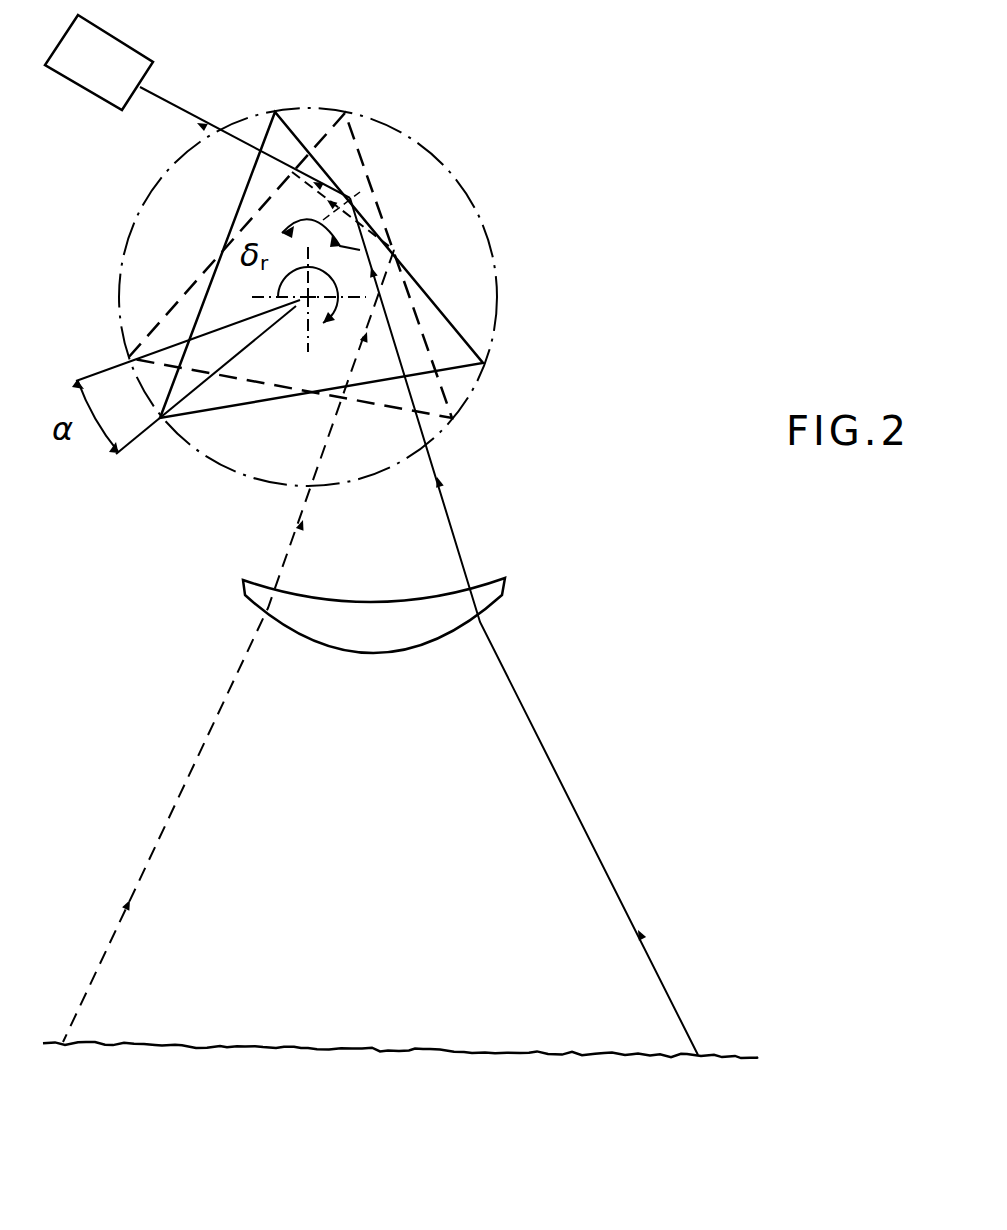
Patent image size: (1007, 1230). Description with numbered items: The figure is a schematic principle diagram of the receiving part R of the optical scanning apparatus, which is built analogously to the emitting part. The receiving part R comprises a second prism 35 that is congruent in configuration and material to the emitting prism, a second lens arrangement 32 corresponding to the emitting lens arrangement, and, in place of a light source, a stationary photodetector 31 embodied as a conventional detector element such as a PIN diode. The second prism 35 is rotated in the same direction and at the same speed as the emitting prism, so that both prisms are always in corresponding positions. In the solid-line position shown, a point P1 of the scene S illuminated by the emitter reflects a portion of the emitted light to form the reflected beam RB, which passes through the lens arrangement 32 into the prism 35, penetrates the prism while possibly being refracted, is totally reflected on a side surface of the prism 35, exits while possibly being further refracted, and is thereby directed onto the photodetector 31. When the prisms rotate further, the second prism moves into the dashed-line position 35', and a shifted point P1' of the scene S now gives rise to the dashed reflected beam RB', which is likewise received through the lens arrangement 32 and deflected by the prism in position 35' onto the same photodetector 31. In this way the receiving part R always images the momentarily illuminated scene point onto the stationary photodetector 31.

The photodetector 31 is at (121, 35).
The second lens arrangement 32 is at (390, 653).
The second prism 35 is at (380, 265).
The rotated position of second prism 35' is at (316, 259).
The receiving part R is at (373, 88).
The reflected beam RB is at (524, 626).
The reflected beam in rotated position RB' is at (228, 646).
The scene S is at (412, 1047).
The point of the scene P1 is at (726, 1012).
The shifted point of the scene P1' is at (42, 999).